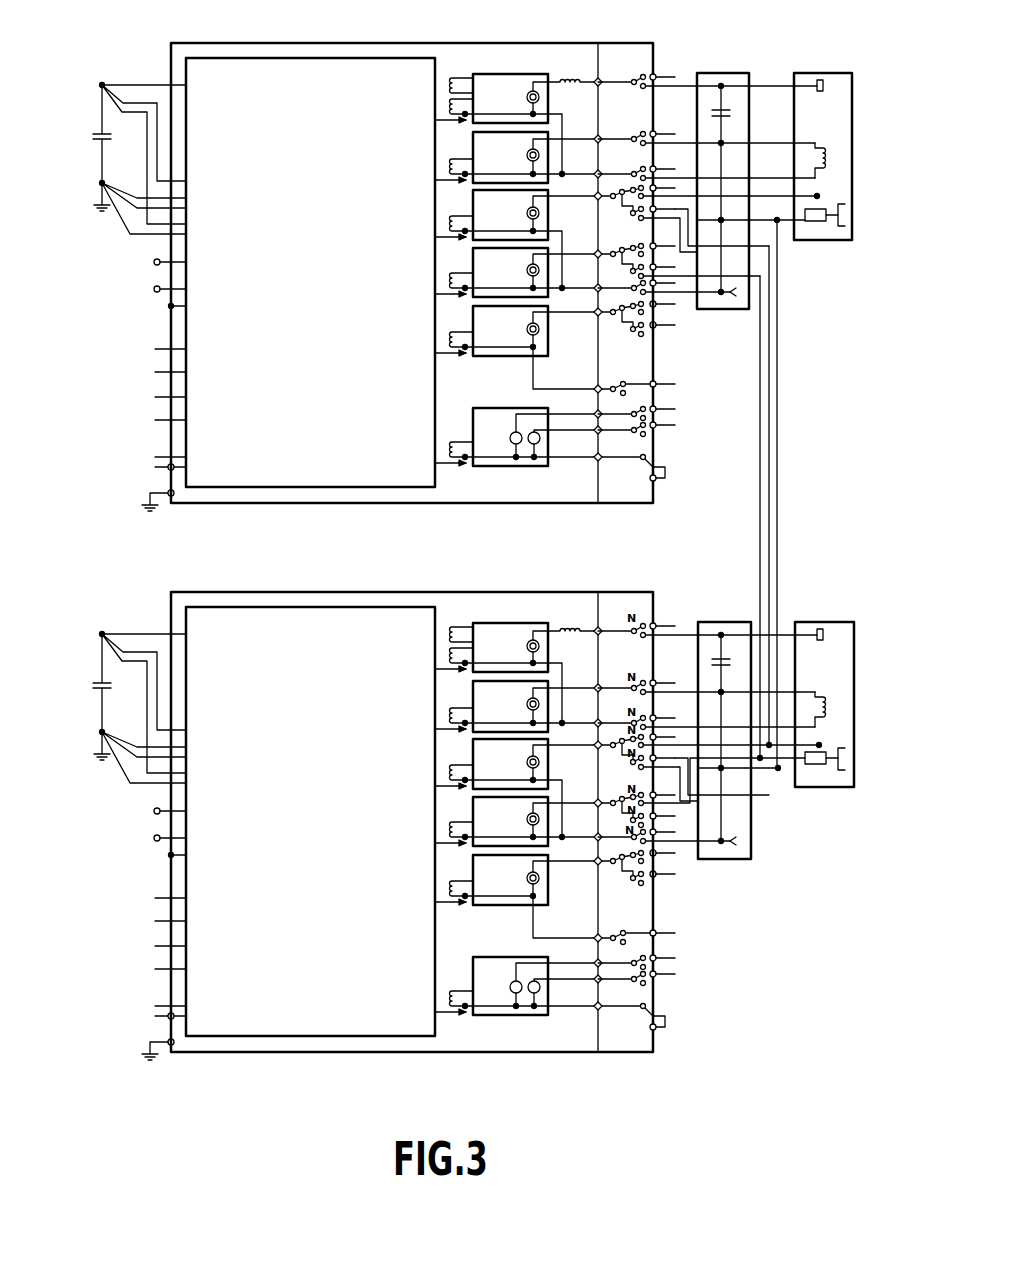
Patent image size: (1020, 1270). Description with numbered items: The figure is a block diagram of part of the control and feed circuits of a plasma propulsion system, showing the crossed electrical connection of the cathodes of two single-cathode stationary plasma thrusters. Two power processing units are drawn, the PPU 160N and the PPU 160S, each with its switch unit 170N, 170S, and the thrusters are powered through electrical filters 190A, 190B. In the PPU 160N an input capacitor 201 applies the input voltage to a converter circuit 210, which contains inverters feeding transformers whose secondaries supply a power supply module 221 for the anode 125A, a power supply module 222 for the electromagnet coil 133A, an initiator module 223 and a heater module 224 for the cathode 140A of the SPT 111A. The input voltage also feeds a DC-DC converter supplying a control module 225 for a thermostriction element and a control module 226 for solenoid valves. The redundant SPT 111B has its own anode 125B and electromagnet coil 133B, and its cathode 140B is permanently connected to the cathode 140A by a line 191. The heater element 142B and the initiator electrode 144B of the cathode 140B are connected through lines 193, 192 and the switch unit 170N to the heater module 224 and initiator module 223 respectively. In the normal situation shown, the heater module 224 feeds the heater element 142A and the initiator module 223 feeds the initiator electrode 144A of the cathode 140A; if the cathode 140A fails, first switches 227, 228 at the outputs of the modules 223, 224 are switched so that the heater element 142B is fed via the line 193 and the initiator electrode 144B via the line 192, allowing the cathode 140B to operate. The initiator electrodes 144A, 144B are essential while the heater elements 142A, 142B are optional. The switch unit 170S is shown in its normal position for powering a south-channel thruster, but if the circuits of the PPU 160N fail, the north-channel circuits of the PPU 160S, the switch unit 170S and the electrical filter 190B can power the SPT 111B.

The input capacitor 201 is at (93, 136).
The converter circuit 210 is at (331, 292).
The power supply module 221 is at (524, 84).
The power supply module 222 is at (485, 147).
The initiator module 223 is at (485, 203).
The heater module 224 is at (485, 262).
The control module 225 is at (485, 318).
The control module 226 is at (485, 422).
The first switch 227 is at (617, 188).
The first switch 228 is at (617, 258).
The SPT 111A is at (790, 73).
The SPT 111B is at (799, 622).
The anode 125A is at (820, 80).
The anode 125B is at (820, 629).
The electromagnet coil 133A is at (830, 164).
The electromagnet coil 133B is at (830, 716).
The initiator electrode 144A is at (814, 196).
The initiator electrode 144B is at (818, 748).
The heater element 142A is at (812, 222).
The heater element 142B is at (814, 766).
The cathode 140A is at (840, 228).
The cathode 140B is at (840, 772).
The electrical filter 190A is at (720, 309).
The electrical filter 190B is at (722, 859).
The line 191 is at (778, 401).
The line 192 is at (770, 431).
The line 193 is at (761, 464).
The PPU 160N is at (250, 503).
The PPU 160S is at (250, 1052).
The switch unit 170N is at (650, 505).
The switch unit 170S is at (650, 1054).